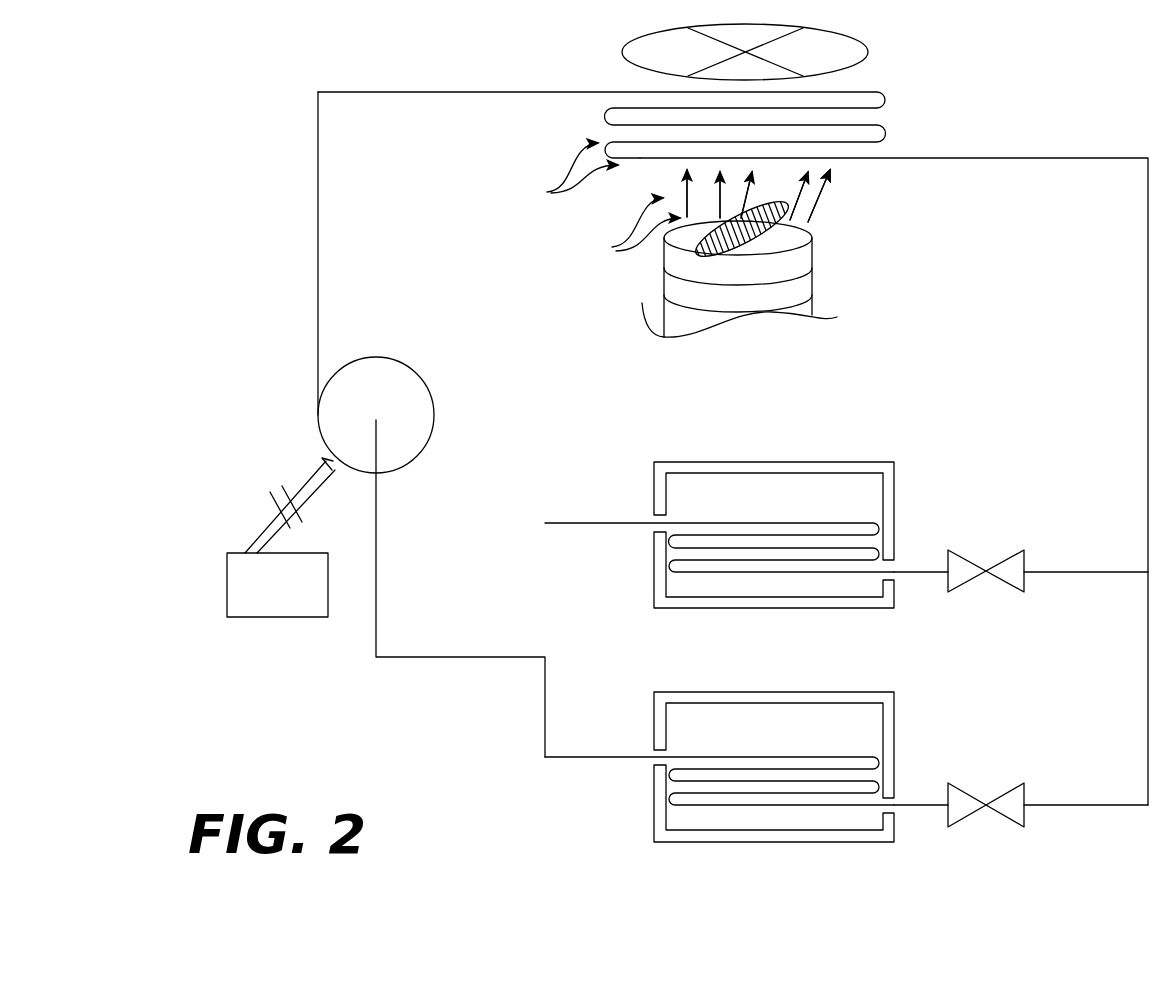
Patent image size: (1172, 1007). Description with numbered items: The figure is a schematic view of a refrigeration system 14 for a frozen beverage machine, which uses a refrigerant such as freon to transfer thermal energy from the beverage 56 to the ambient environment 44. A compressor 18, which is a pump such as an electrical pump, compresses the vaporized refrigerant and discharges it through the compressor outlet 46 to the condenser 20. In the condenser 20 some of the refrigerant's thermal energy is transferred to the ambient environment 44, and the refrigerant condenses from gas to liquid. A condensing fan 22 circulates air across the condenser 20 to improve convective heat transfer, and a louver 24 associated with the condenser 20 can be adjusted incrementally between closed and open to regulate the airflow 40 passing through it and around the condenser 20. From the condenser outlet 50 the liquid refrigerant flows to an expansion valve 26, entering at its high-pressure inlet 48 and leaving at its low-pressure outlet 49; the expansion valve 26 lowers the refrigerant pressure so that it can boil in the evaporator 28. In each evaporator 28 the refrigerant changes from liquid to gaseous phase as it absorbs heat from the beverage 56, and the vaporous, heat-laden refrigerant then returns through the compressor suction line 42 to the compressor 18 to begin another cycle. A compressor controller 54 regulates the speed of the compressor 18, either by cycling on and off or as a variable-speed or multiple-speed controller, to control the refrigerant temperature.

The refrigeration system 14 is at (228, 114).
The compressor 18 is at (410, 366).
The condenser 20 is at (885, 127).
The condensing fan 22 is at (868, 47).
The louver 24 is at (815, 250).
The expansion valve 26 is at (1010, 588).
The evaporator 28 is at (725, 574).
The airflow 40 is at (629, 228).
The compressor suction line 42 is at (462, 658).
The ambient environment 44 is at (565, 174).
The compressor outlet 46 is at (318, 228).
The high-pressure inlet 48 is at (1112, 573).
The low-pressure outlet 49 is at (918, 573).
The condenser outlet 50 is at (1056, 158).
The compressor controller 54 is at (277, 620).
The beverage 56 is at (788, 512).